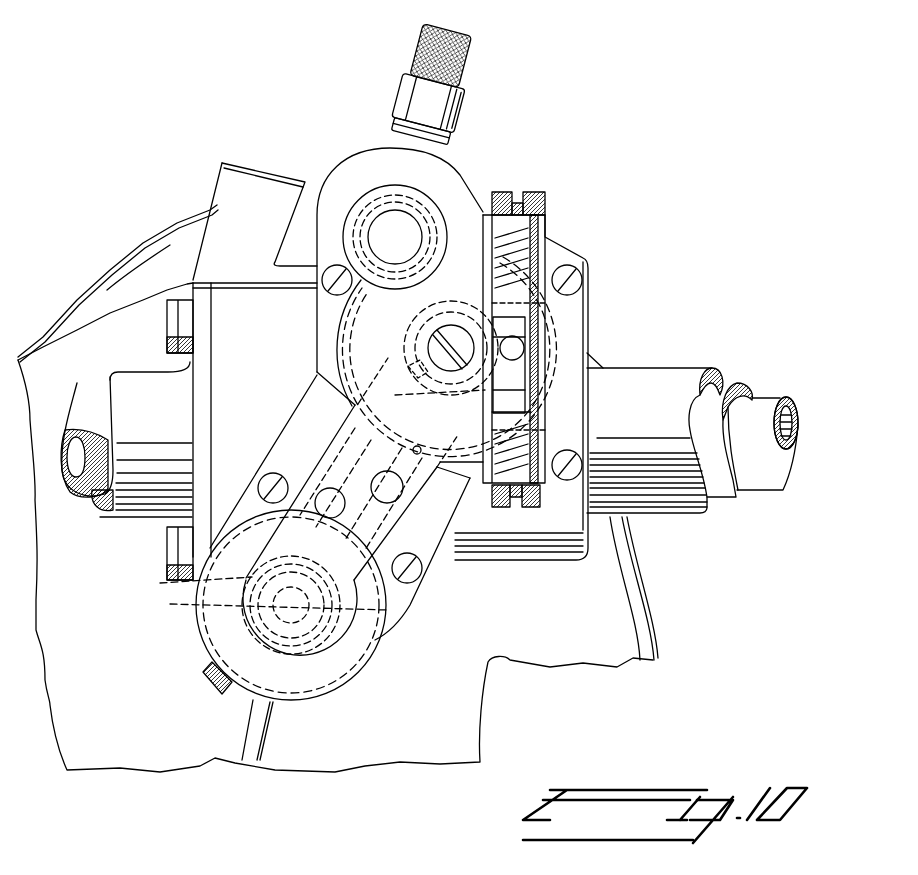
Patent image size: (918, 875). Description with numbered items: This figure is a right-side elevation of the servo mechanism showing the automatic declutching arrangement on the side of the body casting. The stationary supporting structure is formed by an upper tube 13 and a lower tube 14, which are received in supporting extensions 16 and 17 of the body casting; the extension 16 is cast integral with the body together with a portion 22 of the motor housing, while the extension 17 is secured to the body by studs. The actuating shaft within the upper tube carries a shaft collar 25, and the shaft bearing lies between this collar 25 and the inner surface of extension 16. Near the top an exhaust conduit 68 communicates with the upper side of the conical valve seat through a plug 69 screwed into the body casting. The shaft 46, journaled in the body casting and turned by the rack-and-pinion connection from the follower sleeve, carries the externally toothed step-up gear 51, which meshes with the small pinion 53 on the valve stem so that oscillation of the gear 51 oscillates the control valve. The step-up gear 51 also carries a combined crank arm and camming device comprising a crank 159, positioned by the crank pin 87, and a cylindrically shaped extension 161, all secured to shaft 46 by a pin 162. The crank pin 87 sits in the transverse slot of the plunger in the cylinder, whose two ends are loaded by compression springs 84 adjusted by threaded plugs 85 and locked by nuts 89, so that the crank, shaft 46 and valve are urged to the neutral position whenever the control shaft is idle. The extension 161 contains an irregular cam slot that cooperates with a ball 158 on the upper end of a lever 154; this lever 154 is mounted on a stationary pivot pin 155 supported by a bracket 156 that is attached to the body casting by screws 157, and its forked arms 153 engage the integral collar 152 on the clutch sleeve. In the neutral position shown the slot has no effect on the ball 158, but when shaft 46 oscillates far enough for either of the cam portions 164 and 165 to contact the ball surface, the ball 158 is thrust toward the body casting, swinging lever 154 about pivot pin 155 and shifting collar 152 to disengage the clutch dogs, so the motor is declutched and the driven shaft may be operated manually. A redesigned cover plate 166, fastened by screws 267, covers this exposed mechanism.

The upper tube 13 is at (718, 393).
The lower tube 14 is at (90, 395).
The supporting extension 16 is at (665, 380).
The supporting extension 17 is at (135, 382).
The portion of motor housing 22 is at (338, 566).
The shaft collar 25 is at (758, 412).
The shaft 46 is at (430, 320).
The step-up gear 51 is at (340, 343).
The small pinion 53 is at (382, 200).
The exhaust conduit 68 is at (466, 60).
The plug 69 is at (456, 124).
The compression spring 84 is at (537, 250).
The threaded plug 85 is at (520, 196).
The crank pin 87 is at (524, 350).
The nut 89 is at (540, 228).
The integral collar 152 is at (293, 650).
The forked arms 153 is at (398, 624).
The lever 154 is at (430, 482).
The pivot pin 155 is at (415, 505).
The bracket 156 is at (408, 527).
The screws 157 is at (318, 483).
The ball 158 is at (480, 405).
The crank 159 is at (462, 330).
The cylindrically shaped extension 161 is at (430, 355).
The pin 162 is at (425, 335).
The cam portion 164 is at (410, 372).
The cam portion 165 is at (538, 420).
The redesigned cover plate 166 is at (572, 384).
The screw 267 is at (578, 263).